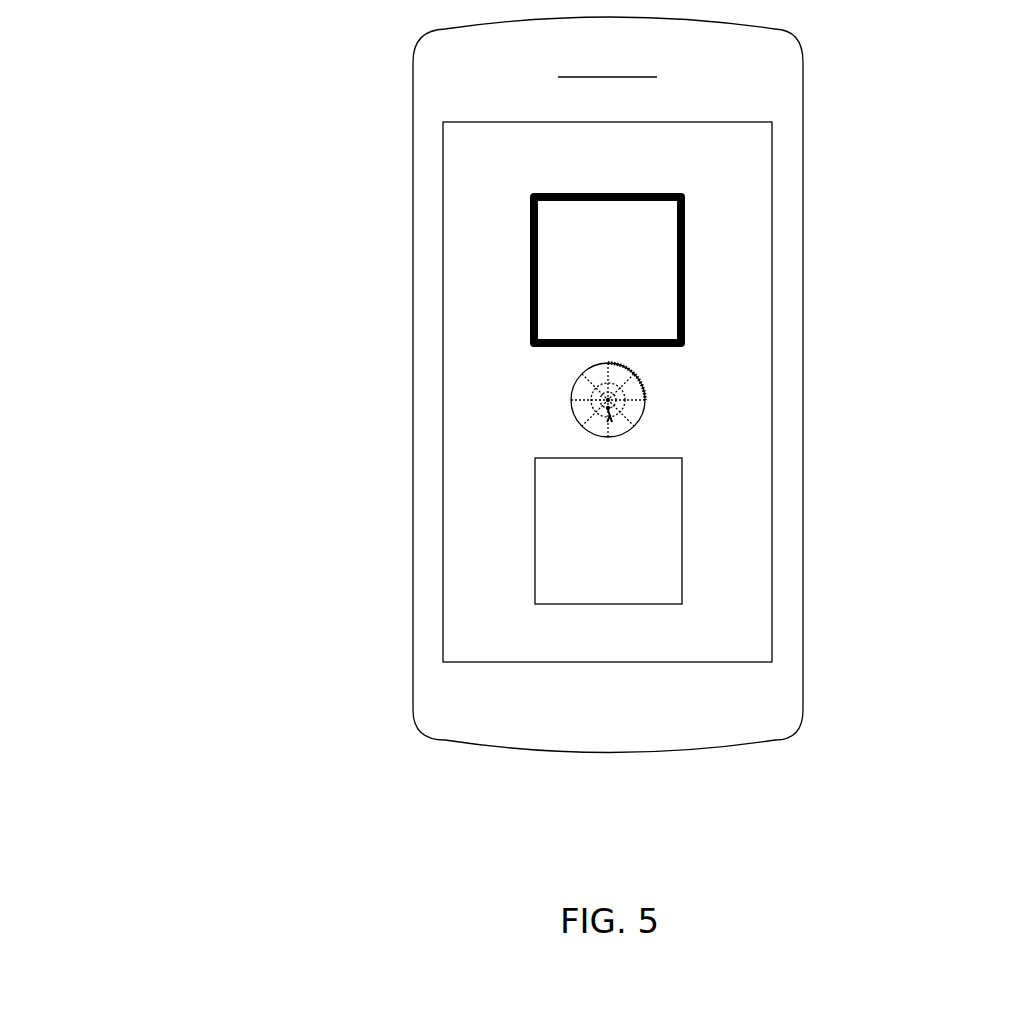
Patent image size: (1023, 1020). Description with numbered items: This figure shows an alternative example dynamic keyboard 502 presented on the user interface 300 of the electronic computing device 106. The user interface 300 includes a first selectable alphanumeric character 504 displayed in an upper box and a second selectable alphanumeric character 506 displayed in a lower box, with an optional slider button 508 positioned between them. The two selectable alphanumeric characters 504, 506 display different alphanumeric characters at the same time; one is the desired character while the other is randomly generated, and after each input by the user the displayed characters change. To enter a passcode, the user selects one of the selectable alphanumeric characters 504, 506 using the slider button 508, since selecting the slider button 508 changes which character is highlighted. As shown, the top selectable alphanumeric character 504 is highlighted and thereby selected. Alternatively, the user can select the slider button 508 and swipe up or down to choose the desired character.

The electronic computing device 106 is at (188, 139).
The user interface 300 is at (470, 454).
The dynamic keyboard 502 is at (460, 352).
The first selectable alphanumeric character 504 is at (658, 235).
The second selectable alphanumeric character 506 is at (660, 548).
The slider button 508 is at (642, 396).